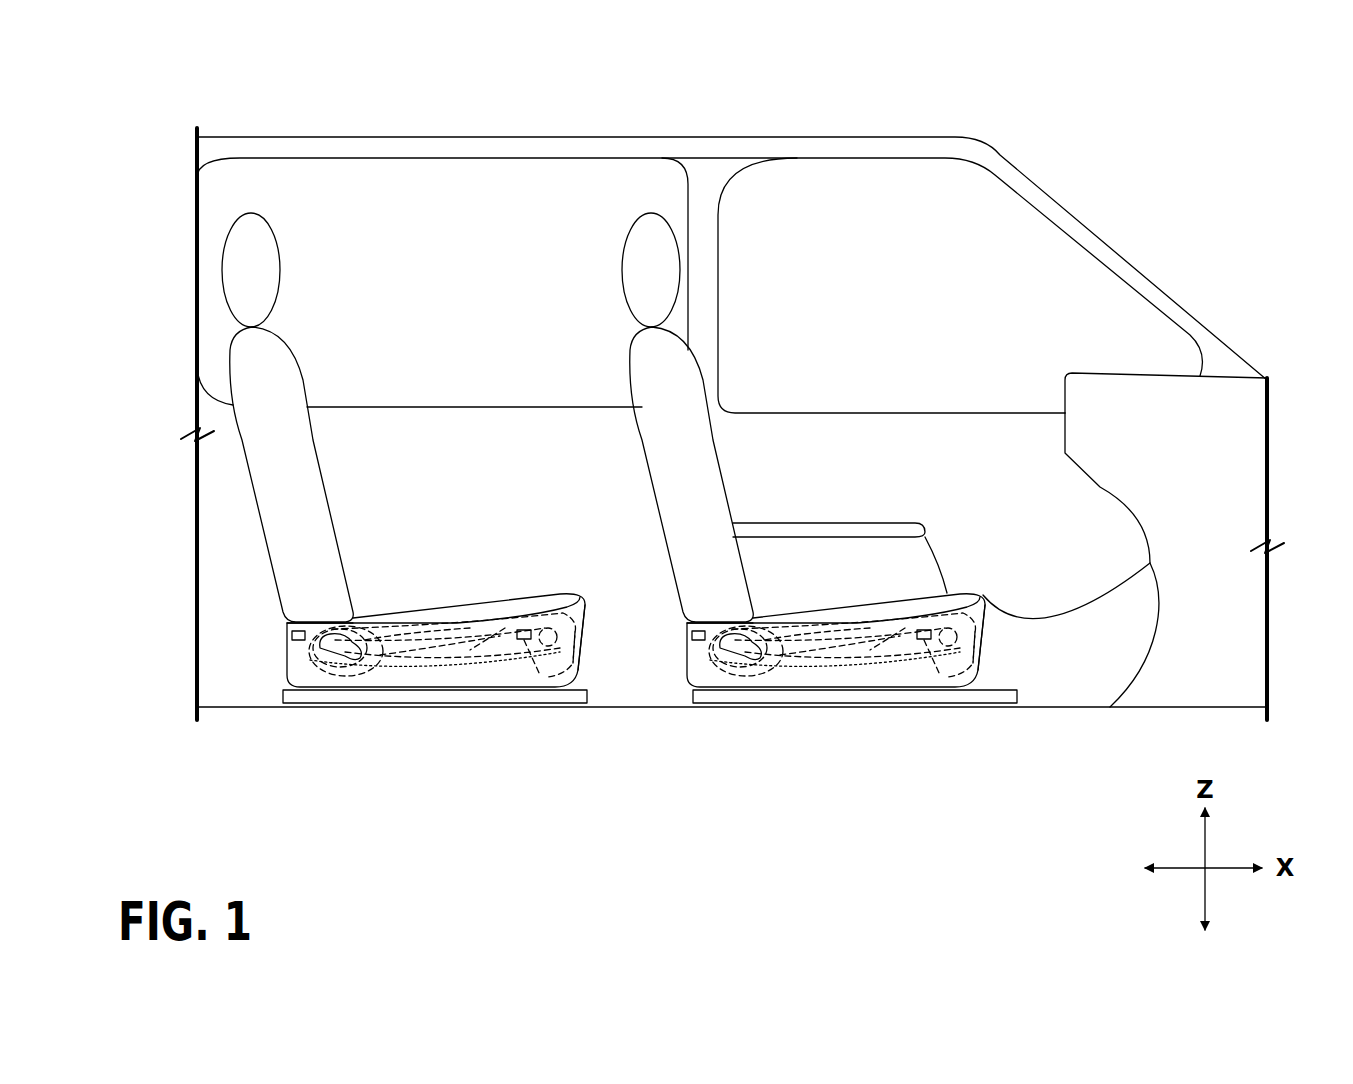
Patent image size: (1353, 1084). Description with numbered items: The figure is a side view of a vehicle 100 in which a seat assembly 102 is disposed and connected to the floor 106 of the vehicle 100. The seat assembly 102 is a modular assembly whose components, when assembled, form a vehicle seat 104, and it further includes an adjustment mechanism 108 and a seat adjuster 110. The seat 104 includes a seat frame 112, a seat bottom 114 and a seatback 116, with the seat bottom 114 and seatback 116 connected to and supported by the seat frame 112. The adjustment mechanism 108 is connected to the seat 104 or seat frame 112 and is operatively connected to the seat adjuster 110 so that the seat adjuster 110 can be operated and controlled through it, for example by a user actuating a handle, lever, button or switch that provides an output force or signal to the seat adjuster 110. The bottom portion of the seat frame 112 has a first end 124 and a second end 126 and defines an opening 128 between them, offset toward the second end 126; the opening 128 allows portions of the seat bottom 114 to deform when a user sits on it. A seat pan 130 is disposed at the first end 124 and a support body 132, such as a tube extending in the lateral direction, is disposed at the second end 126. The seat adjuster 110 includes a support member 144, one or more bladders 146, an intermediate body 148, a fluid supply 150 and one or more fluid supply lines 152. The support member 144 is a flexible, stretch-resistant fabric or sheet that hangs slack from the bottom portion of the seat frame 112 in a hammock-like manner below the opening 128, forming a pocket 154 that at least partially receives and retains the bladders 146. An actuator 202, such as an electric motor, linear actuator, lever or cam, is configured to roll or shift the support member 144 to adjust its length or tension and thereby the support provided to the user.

The vehicle 100 is at (1068, 143).
The seat assembly 102 is at (247, 207).
The seat 104 is at (267, 227).
The floor 106 is at (224, 707).
The adjustment mechanism 108 is at (368, 657).
The seat adjuster 110 is at (419, 677).
The seat frame 112 is at (537, 617).
The seat bottom 114 is at (570, 630).
The seatback 116 is at (330, 456).
The first end 124 is at (590, 650).
The second end 126 is at (308, 665).
The opening 128 is at (504, 609).
The seat pan 130 is at (578, 636).
The support body 132 is at (287, 653).
The support member 144 is at (402, 657).
The bladder 146 is at (418, 650).
The intermediate body 148 is at (485, 615).
The fluid supply 150 is at (524, 645).
The fluid supply line 152 is at (450, 643).
The pocket 154 is at (473, 632).
The actuator 202 is at (292, 634).